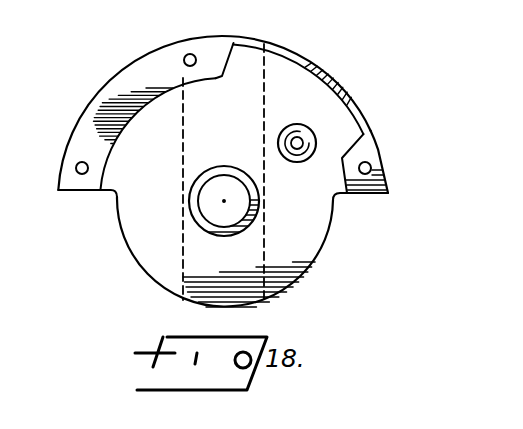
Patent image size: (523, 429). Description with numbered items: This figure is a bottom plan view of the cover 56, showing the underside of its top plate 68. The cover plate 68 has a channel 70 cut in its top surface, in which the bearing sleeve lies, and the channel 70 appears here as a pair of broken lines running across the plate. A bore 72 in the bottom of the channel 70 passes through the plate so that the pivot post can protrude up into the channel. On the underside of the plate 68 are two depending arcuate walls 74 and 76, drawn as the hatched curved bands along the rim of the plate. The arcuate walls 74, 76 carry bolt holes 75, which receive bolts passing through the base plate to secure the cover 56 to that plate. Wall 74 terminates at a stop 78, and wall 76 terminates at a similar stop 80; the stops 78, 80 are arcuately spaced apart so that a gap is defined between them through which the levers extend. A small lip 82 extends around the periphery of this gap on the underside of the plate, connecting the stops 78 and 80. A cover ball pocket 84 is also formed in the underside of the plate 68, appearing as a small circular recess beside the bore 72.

The cover 56 is at (134, 273).
The top plate 68 is at (313, 263).
The channel 70 is at (182, 276).
The bore 72 is at (231, 150).
The arcuate wall 74 is at (380, 149).
The bolt holes 75 is at (190, 54).
The arcuate wall 76 is at (124, 72).
The stop 78 is at (352, 137).
The stop 80 is at (231, 58).
The lip 82 is at (327, 78).
The cover ball pocket 84 is at (302, 152).